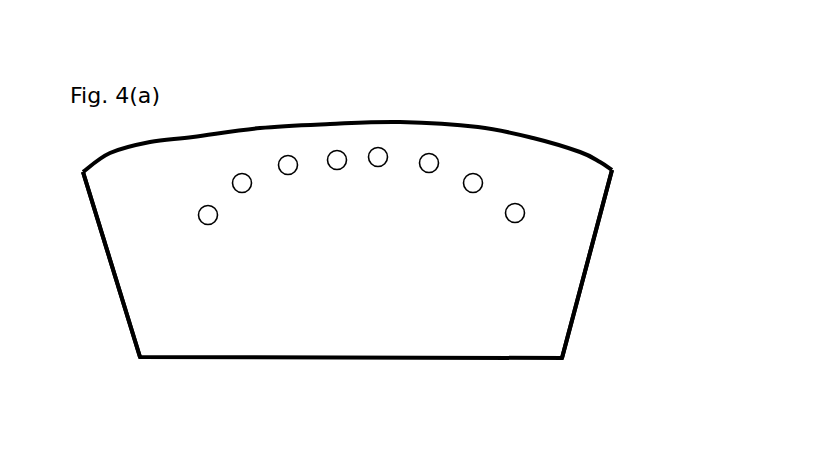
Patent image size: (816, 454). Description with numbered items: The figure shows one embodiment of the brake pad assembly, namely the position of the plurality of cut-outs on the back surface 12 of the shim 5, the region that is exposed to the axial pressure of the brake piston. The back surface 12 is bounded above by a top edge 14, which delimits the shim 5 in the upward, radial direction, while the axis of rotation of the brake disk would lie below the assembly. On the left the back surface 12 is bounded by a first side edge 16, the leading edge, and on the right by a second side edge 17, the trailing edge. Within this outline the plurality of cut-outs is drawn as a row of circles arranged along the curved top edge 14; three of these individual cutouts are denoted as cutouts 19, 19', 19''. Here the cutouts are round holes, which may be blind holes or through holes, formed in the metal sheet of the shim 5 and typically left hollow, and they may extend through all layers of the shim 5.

The shim 5 is at (361, 215).
The back surface 12 is at (361, 215).
The top edge 14 is at (478, 127).
The first side edge 16 is at (108, 257).
The second side edge 17 is at (592, 260).
The individual cutout 19 is at (265, 117).
The individual cutout 19' is at (313, 115).
The individual cutout 19'' is at (356, 110).